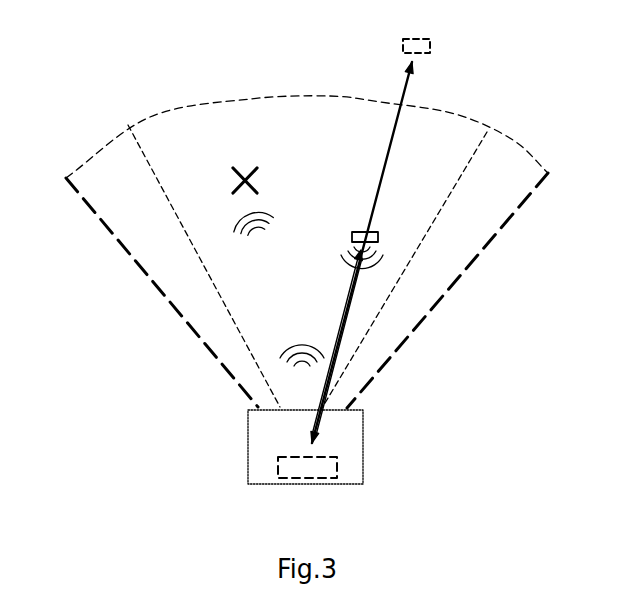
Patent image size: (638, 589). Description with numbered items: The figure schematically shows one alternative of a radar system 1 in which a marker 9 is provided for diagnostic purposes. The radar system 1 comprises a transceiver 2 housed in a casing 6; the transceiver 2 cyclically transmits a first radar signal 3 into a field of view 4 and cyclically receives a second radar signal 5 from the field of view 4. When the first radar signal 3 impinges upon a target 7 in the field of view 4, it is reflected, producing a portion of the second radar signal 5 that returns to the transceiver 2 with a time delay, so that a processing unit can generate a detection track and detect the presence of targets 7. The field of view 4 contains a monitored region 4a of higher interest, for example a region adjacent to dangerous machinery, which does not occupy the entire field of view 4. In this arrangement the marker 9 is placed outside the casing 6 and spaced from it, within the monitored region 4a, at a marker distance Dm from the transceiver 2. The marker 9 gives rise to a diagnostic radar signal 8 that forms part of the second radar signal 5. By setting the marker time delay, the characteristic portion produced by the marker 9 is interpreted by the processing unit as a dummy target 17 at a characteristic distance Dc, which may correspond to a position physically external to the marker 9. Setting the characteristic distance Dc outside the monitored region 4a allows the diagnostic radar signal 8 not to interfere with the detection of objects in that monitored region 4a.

The radar system 1 is at (142, 368).
The transceiver 2 is at (337, 467).
The first radar signal 3 is at (302, 337).
The field of view 4 is at (487, 248).
The monitored region 4a is at (477, 143).
The second radar signal 5 is at (283, 209).
The casing 6 is at (363, 447).
The target 7 is at (248, 170).
The diagnostic radar signal 8 is at (387, 268).
The marker 9 is at (378, 236).
The dummy target 17 is at (430, 46).
The characteristic distance Dc is at (400, 82).
The marker distance Dm is at (343, 340).